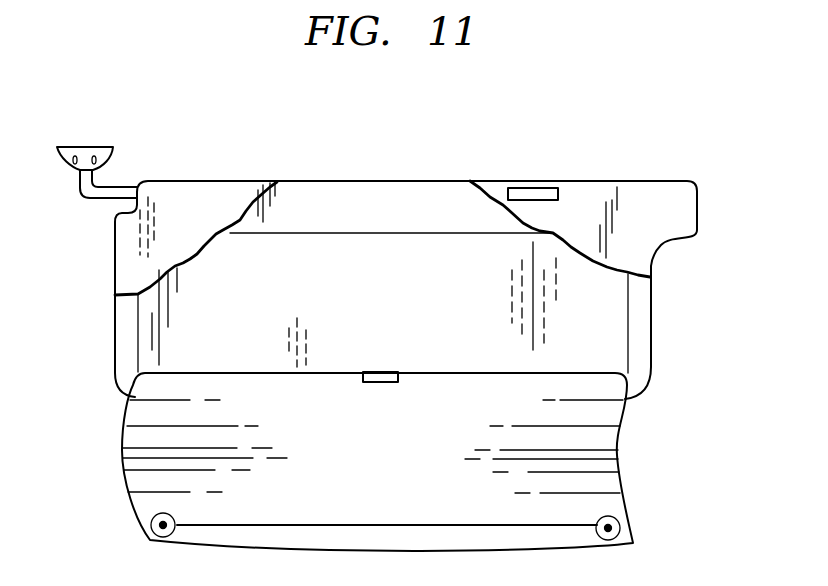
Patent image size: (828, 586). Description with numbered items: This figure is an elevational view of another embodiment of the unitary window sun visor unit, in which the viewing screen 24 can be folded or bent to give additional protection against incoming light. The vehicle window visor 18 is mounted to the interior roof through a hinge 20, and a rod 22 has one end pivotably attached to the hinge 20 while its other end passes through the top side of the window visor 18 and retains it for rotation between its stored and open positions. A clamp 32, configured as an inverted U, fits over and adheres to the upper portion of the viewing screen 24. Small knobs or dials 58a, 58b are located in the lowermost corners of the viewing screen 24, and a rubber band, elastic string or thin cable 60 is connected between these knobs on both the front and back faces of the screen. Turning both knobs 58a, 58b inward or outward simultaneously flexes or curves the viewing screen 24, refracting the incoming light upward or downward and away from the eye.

The window visor 18 is at (657, 258).
The hinge 20 is at (82, 145).
The rod 22 is at (112, 192).
The viewing screen 24 is at (573, 457).
The clamp 32 is at (385, 372).
The cable 60 is at (357, 525).
The knob 58a is at (150, 527).
The knob 58b is at (614, 531).